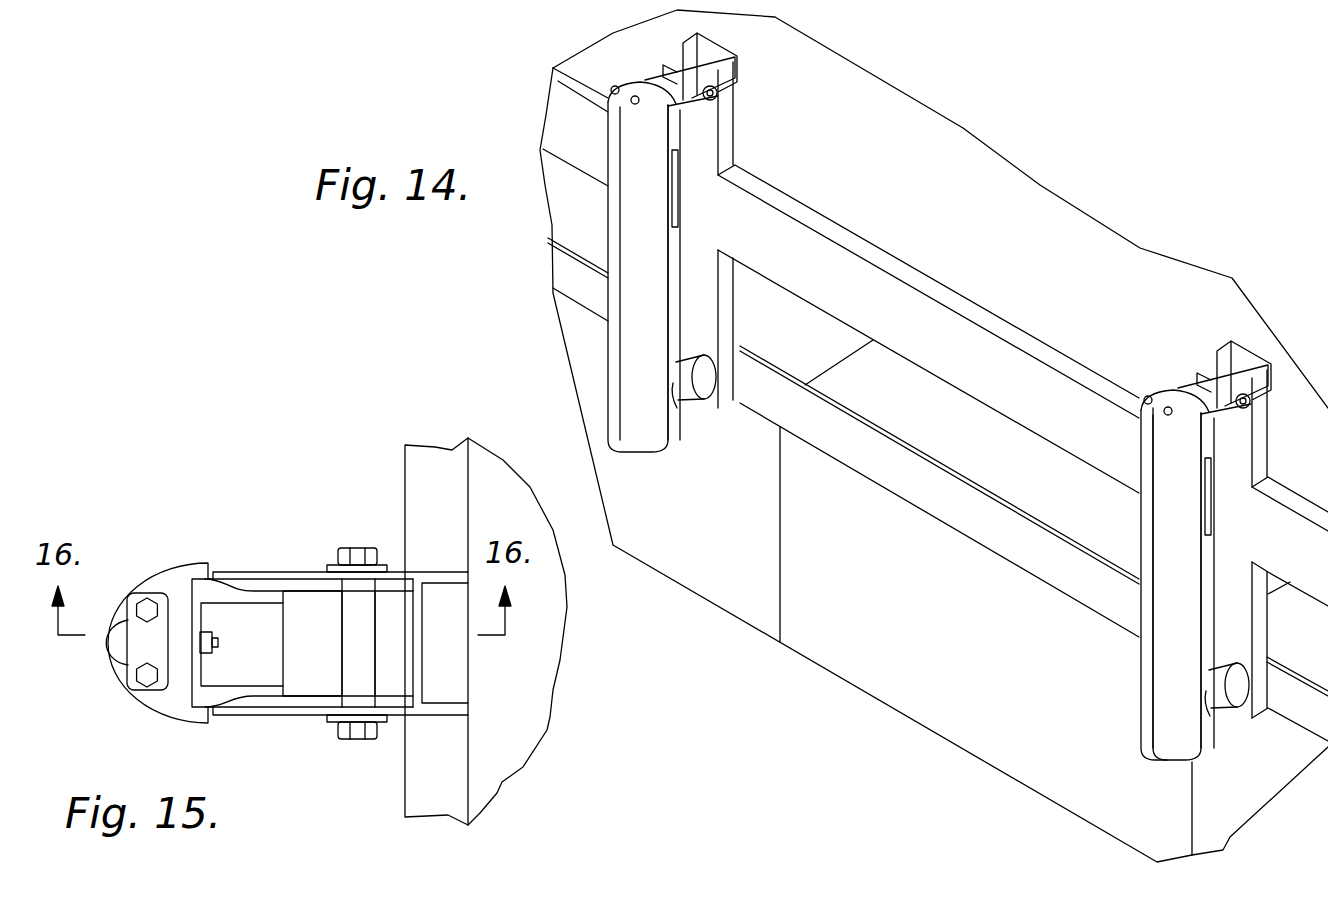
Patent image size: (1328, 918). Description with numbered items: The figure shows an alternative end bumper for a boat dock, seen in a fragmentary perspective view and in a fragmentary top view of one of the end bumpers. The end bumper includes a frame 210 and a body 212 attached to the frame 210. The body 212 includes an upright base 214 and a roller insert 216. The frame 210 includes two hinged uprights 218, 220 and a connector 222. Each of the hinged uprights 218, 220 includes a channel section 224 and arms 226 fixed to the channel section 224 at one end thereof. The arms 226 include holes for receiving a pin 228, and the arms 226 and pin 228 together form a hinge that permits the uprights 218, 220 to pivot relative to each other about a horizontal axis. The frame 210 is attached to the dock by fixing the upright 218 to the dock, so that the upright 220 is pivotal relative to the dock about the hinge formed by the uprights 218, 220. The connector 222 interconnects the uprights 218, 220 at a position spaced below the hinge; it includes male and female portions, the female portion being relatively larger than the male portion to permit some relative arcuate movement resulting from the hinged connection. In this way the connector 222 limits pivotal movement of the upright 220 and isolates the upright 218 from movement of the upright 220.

In FIG. 14, the frame 210 is at (727, 160).
In FIG. 14, the body 212 is at (1165, 452).
In FIG. 15, the body 212 is at (170, 575).
In FIG. 14, the upright base 214 is at (640, 226).
In FIG. 14, the roller insert 216 is at (1145, 677).
In FIG. 15, the roller insert 216 is at (115, 655).
In FIG. 14, the hinged upright 218 is at (1220, 370).
In FIG. 15, the hinged upright 218 is at (447, 580).
In FIG. 15, the hinged upright 220 is at (222, 585).
In FIG. 14, the connector 222 is at (690, 393).
In FIG. 15, the channel section 224 is at (418, 709).
In FIG. 14, the arms 226 is at (730, 80).
In FIG. 15, the arms 226 is at (397, 568).
In FIG. 15, the pin 228 is at (362, 658).